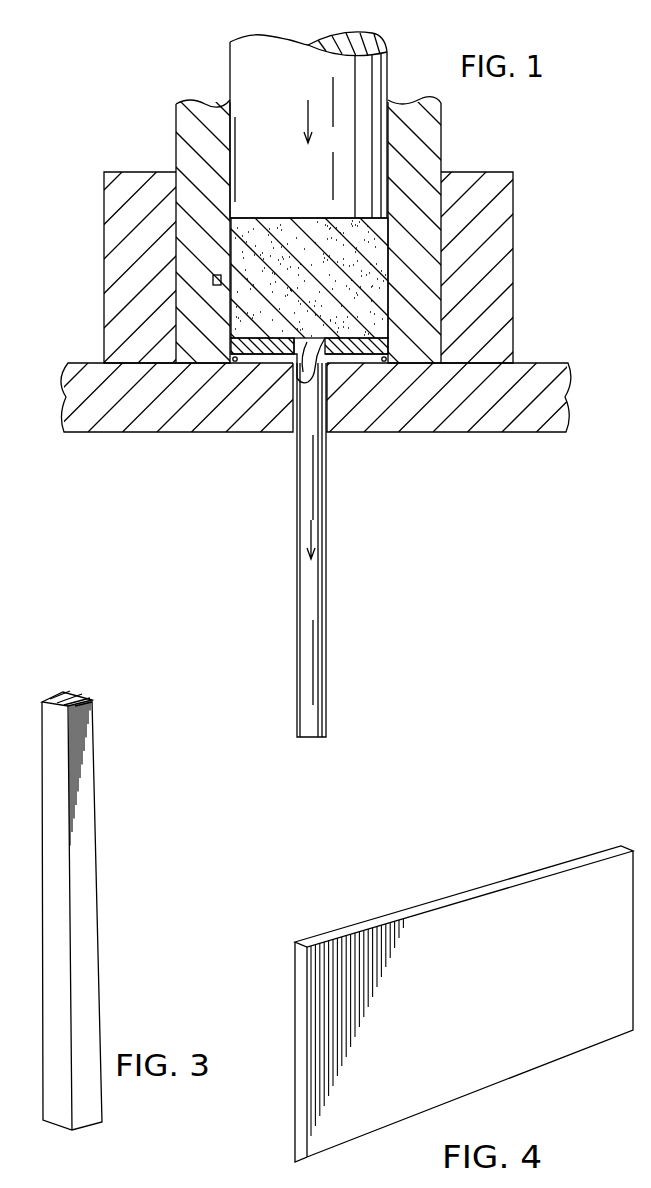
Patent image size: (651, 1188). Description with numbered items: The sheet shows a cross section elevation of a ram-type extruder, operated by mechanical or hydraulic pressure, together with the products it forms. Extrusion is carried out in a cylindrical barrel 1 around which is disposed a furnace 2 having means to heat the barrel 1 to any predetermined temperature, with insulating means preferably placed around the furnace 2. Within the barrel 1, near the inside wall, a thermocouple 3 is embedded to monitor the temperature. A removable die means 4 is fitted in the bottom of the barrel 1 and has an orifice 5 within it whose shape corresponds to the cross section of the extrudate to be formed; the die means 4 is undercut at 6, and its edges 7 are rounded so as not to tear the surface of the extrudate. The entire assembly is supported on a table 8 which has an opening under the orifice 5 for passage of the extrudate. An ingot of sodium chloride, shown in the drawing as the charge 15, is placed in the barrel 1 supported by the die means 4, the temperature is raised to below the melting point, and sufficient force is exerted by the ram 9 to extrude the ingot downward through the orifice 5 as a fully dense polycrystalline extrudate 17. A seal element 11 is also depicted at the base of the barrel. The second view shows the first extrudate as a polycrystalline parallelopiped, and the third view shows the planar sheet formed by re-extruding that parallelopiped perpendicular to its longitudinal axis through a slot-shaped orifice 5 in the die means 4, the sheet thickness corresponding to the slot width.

The cylindrical barrel 1 is at (430, 145).
The furnace 2 is at (503, 271).
The thermocouple 3 is at (213, 283).
The die means 4 is at (388, 342).
The orifice 5 is at (305, 344).
The undercut 6 is at (290, 365).
The rounded edges 7 is at (311, 397).
The table 8 is at (443, 418).
The ram 9 is at (243, 52).
The seal 11 is at (232, 358).
The billet / workpiece 15 is at (302, 230).
The extruded product 17 is at (315, 565).